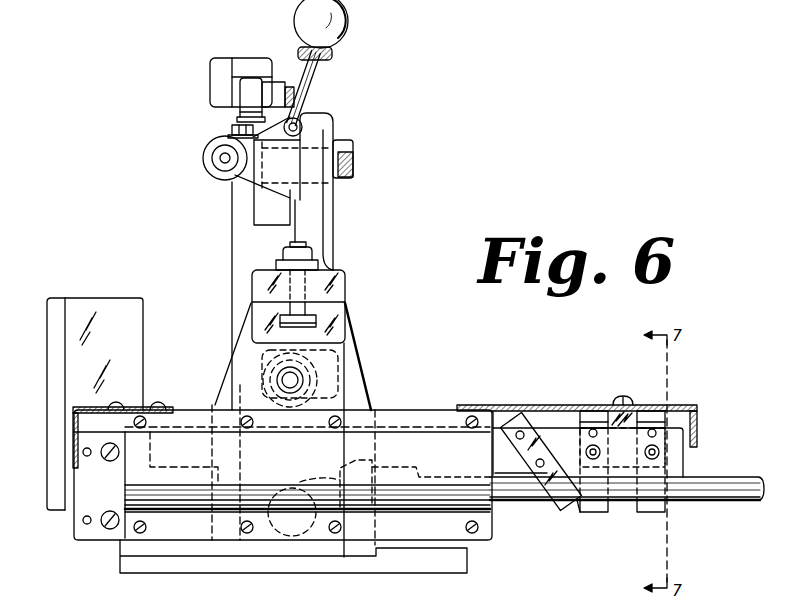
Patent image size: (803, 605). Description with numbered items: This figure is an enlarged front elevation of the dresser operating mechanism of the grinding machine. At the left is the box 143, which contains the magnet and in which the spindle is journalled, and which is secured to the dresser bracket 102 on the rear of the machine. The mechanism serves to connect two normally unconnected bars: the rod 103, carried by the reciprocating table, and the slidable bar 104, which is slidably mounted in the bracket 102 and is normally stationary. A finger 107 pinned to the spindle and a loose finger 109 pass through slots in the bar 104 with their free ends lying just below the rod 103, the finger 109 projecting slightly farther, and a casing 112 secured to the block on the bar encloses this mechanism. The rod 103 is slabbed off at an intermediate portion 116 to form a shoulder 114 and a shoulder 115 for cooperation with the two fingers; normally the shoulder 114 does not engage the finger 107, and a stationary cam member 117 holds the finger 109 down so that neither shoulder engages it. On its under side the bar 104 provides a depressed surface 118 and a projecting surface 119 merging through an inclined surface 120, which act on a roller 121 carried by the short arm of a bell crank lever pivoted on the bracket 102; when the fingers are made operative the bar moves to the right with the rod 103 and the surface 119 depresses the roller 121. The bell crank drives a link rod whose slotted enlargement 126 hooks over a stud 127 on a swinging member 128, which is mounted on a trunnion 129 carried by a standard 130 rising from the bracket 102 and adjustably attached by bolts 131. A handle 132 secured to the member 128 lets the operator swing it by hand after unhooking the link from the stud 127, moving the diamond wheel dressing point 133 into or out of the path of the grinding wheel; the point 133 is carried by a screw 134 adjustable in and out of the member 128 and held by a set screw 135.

The dresser bracket 102 is at (338, 309).
The rod 103 is at (722, 483).
The slidable bar 104 is at (678, 463).
The finger 107 is at (602, 513).
The finger 109 is at (652, 513).
The casing 112 is at (677, 405).
The shoulder 114 is at (579, 514).
The shoulder 115 is at (669, 500).
The slabbed-off portion 116 is at (623, 500).
The stationary cam member 117 is at (558, 498).
The depressed surface 118 is at (402, 463).
The projecting surface 119 is at (304, 485).
The inclined surface 120 is at (353, 463).
The roller 121 is at (311, 543).
The slotted enlargement 126 is at (251, 80).
The stud 127 is at (238, 97).
The swinging member 128 is at (265, 208).
The trunnion 129 is at (353, 164).
The standard 130 is at (322, 243).
The bolts 131 is at (283, 248).
The handle 132 is at (350, 30).
The wheel dressing point 133 is at (217, 157).
The screw 134 is at (220, 163).
The set screw 135 is at (219, 126).
The box 143 is at (112, 303).